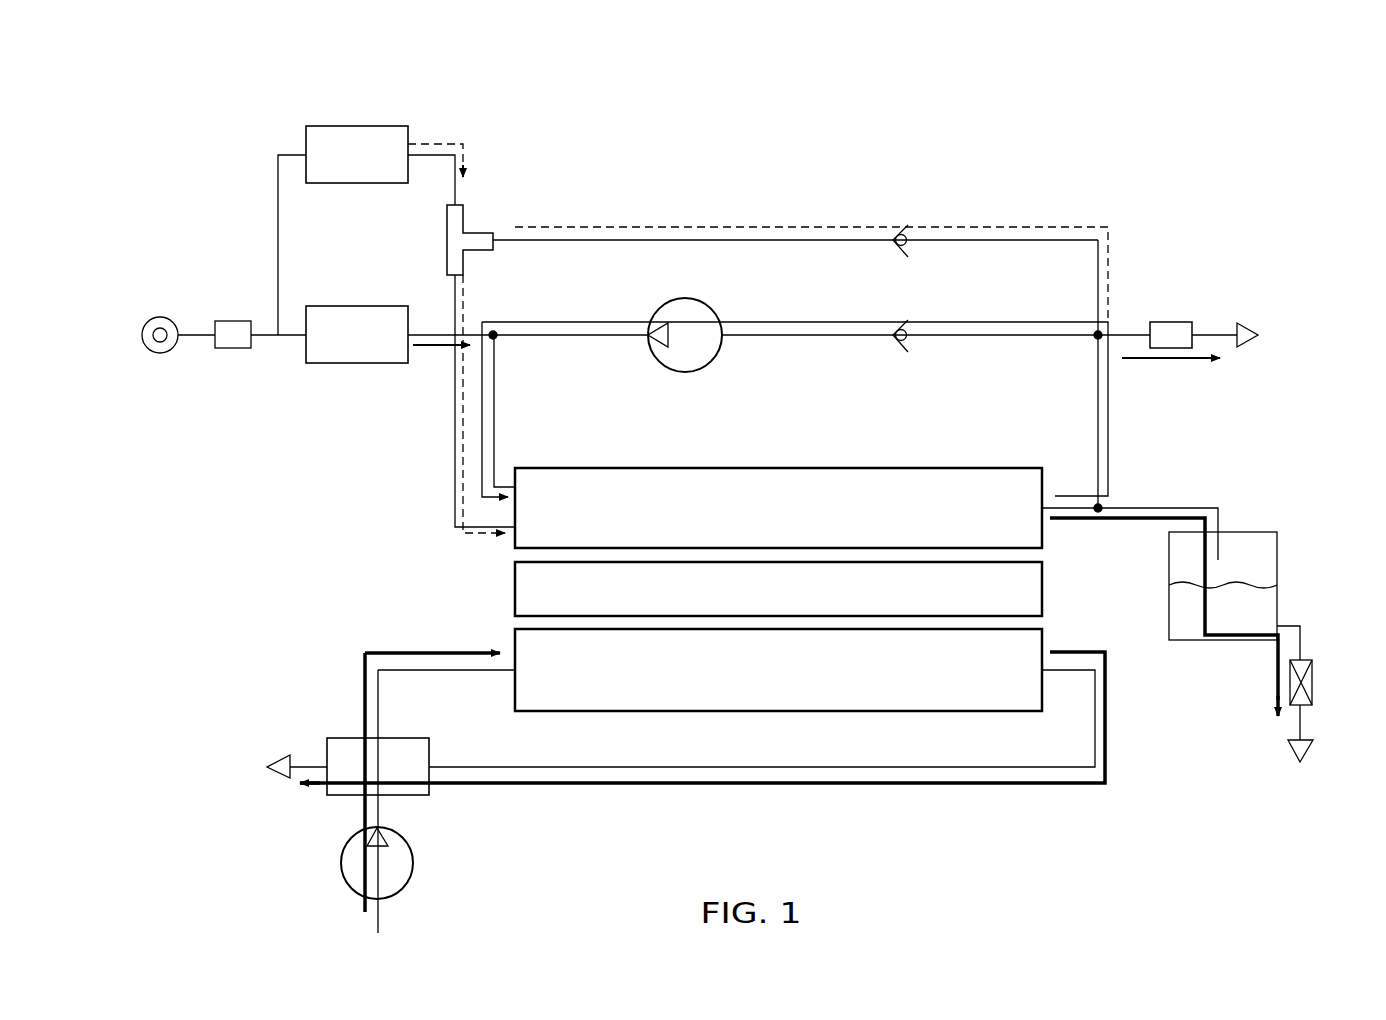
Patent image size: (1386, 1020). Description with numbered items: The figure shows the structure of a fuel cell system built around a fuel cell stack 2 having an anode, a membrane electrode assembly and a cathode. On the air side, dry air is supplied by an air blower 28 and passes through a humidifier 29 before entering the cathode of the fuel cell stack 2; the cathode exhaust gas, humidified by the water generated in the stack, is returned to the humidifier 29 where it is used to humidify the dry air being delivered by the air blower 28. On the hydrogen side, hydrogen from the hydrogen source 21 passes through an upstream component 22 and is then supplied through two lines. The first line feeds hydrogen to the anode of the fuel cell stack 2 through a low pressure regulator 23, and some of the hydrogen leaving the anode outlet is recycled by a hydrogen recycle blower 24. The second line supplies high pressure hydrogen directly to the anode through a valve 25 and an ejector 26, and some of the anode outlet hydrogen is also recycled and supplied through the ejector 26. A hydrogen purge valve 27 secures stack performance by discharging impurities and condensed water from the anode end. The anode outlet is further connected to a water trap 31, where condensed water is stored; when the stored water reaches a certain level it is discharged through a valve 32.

The fuel cell stack 2 is at (954, 459).
The hydrogen tank 21 is at (160, 316).
The high pressure regulator 22 is at (232, 320).
The low pressure regulator 23 is at (358, 306).
The hydrogen recycle blower 24 is at (686, 298).
The valve 25 is at (358, 128).
The ejector 26 is at (478, 230).
The hydrogen purge valve 27 is at (1172, 322).
The air blower 28 is at (413, 862).
The humidifier 29 is at (350, 738).
The water trap 31 is at (1255, 532).
The valve 32 is at (1312, 680).